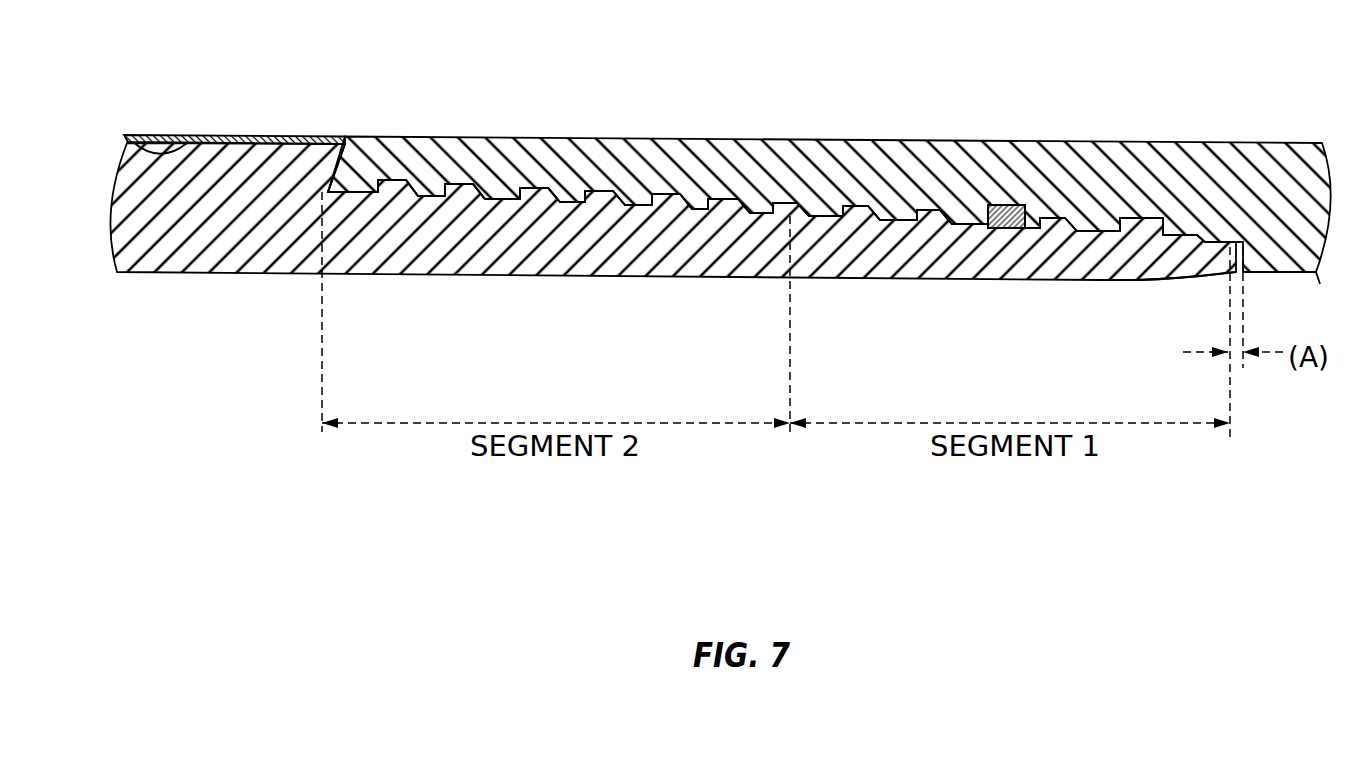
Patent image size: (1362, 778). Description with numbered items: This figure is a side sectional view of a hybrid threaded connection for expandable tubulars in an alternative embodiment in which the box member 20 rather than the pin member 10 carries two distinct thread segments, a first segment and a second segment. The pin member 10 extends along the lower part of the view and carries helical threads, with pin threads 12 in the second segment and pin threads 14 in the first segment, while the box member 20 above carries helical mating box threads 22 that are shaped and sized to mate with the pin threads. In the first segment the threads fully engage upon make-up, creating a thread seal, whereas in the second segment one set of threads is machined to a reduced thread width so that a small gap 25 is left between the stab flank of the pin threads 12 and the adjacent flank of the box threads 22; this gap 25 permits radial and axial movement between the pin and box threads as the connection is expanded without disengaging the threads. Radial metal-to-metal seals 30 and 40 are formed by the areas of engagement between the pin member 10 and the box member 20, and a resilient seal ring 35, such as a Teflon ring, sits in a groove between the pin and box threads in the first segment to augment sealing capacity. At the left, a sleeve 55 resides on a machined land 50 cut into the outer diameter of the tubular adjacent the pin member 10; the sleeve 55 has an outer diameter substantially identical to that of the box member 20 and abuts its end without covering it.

The pin member 10 is at (122, 243).
The pin threads 12 is at (533, 203).
The pin threads 14 is at (1000, 228).
The box member 20 is at (1246, 165).
The box threads 22 is at (875, 210).
The gap 25 is at (615, 197).
The radial metal-to-metal seal 30 is at (1186, 248).
The resilient seal ring 35 is at (1008, 205).
The radial metal-to-metal seal 40 is at (338, 185).
The machined land 50 is at (142, 169).
The sleeve 55 is at (232, 141).